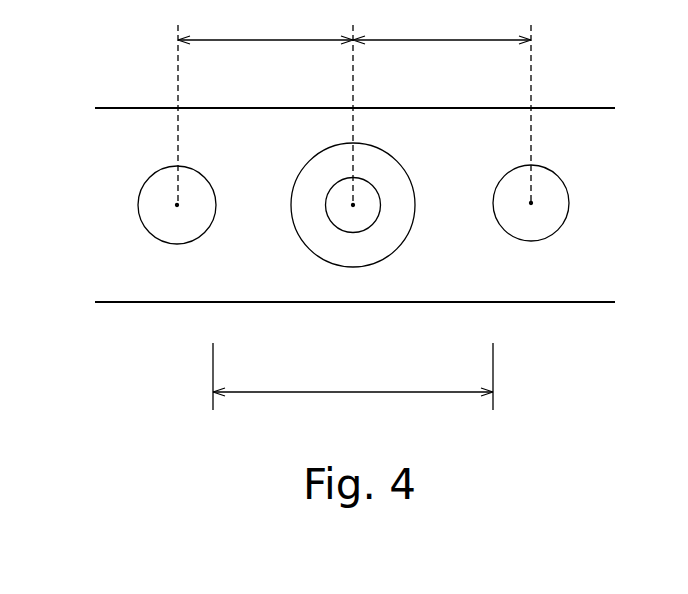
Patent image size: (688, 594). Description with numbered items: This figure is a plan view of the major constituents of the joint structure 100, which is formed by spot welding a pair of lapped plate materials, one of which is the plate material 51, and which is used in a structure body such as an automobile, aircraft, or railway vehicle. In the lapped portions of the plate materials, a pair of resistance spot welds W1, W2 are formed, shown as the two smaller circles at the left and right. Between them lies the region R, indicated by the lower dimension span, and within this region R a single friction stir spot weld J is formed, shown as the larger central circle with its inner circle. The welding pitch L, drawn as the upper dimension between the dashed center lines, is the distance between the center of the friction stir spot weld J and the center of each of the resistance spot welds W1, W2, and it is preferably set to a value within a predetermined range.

The joint structure 100 is at (117, 106).
The plate material 51 is at (577, 116).
The resistance spot weld W1 is at (180, 235).
The resistance spot weld W2 is at (538, 230).
The friction stir spot weld J is at (358, 258).
The welding pitch L is at (354, 108).
The region R is at (353, 386).